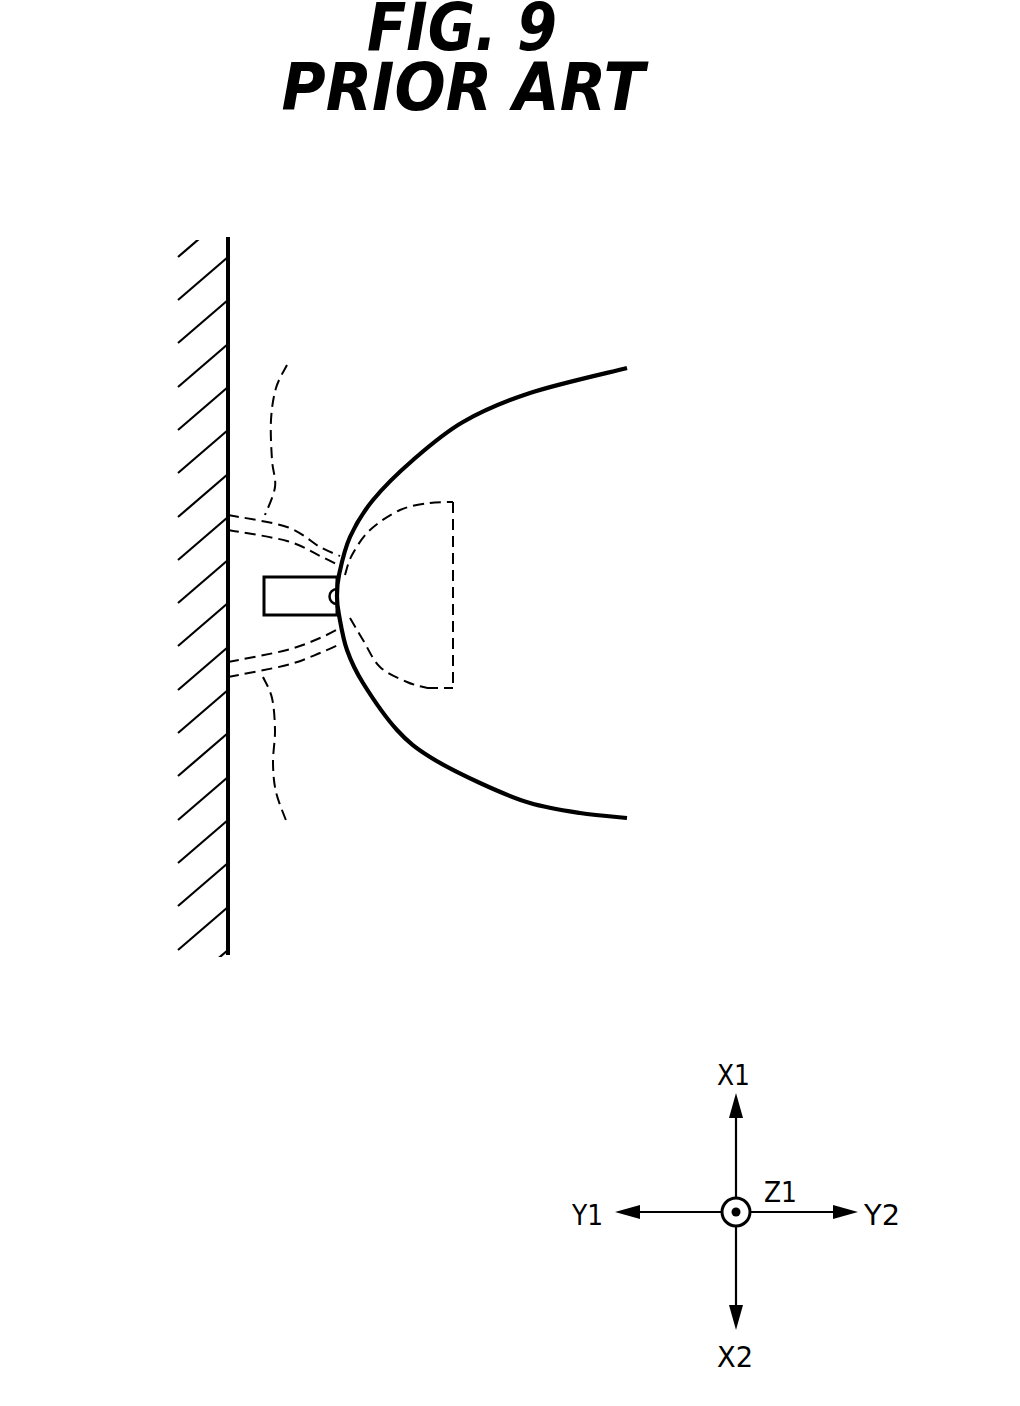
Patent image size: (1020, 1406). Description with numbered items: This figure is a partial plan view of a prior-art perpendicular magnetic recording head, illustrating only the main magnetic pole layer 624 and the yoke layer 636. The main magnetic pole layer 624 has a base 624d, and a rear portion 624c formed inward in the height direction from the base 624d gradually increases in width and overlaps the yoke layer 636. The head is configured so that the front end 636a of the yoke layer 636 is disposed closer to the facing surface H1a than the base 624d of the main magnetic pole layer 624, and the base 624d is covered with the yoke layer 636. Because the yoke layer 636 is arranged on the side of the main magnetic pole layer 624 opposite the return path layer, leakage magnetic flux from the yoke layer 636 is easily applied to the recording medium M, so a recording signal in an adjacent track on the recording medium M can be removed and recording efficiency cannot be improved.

The main magnetic pole layer 624 is at (282, 577).
The facing surface H1a is at (264, 598).
The front end 636a is at (340, 598).
The base 624d is at (350, 572).
The rear portion 624c is at (427, 690).
The yoke layer 636 is at (573, 830).
The recording medium M is at (228, 918).